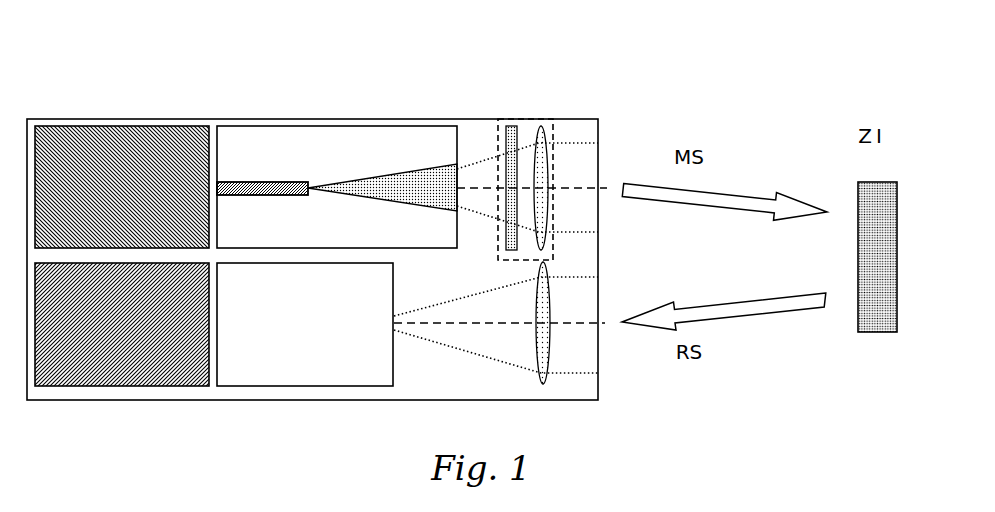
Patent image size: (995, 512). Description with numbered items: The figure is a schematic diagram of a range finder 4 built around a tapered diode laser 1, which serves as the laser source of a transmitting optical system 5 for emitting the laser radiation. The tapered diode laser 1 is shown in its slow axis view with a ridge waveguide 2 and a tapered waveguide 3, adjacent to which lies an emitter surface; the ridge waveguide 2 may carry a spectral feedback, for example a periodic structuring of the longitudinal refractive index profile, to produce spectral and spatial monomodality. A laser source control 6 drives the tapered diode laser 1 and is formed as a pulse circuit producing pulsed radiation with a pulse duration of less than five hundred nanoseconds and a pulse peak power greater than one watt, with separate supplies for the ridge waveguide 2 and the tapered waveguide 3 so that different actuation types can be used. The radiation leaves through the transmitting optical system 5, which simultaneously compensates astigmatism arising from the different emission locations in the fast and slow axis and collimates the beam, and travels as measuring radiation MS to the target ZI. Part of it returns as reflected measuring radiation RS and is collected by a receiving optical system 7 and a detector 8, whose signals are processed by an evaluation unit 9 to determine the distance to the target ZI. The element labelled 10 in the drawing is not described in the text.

The tapered diode laser 1 is at (336, 156).
The ridge waveguide 2 is at (279, 210).
The tapered waveguide 3 is at (336, 114).
The range finder 4 is at (192, 98).
The transmitting optical system 5 is at (448, 155).
The laser source control 6 is at (122, 160).
The receiving optical system 7 is at (605, 351).
The detector 8 is at (305, 352).
The evaluation unit 9 is at (122, 352).
The transmitting optics 10 is at (538, 160).